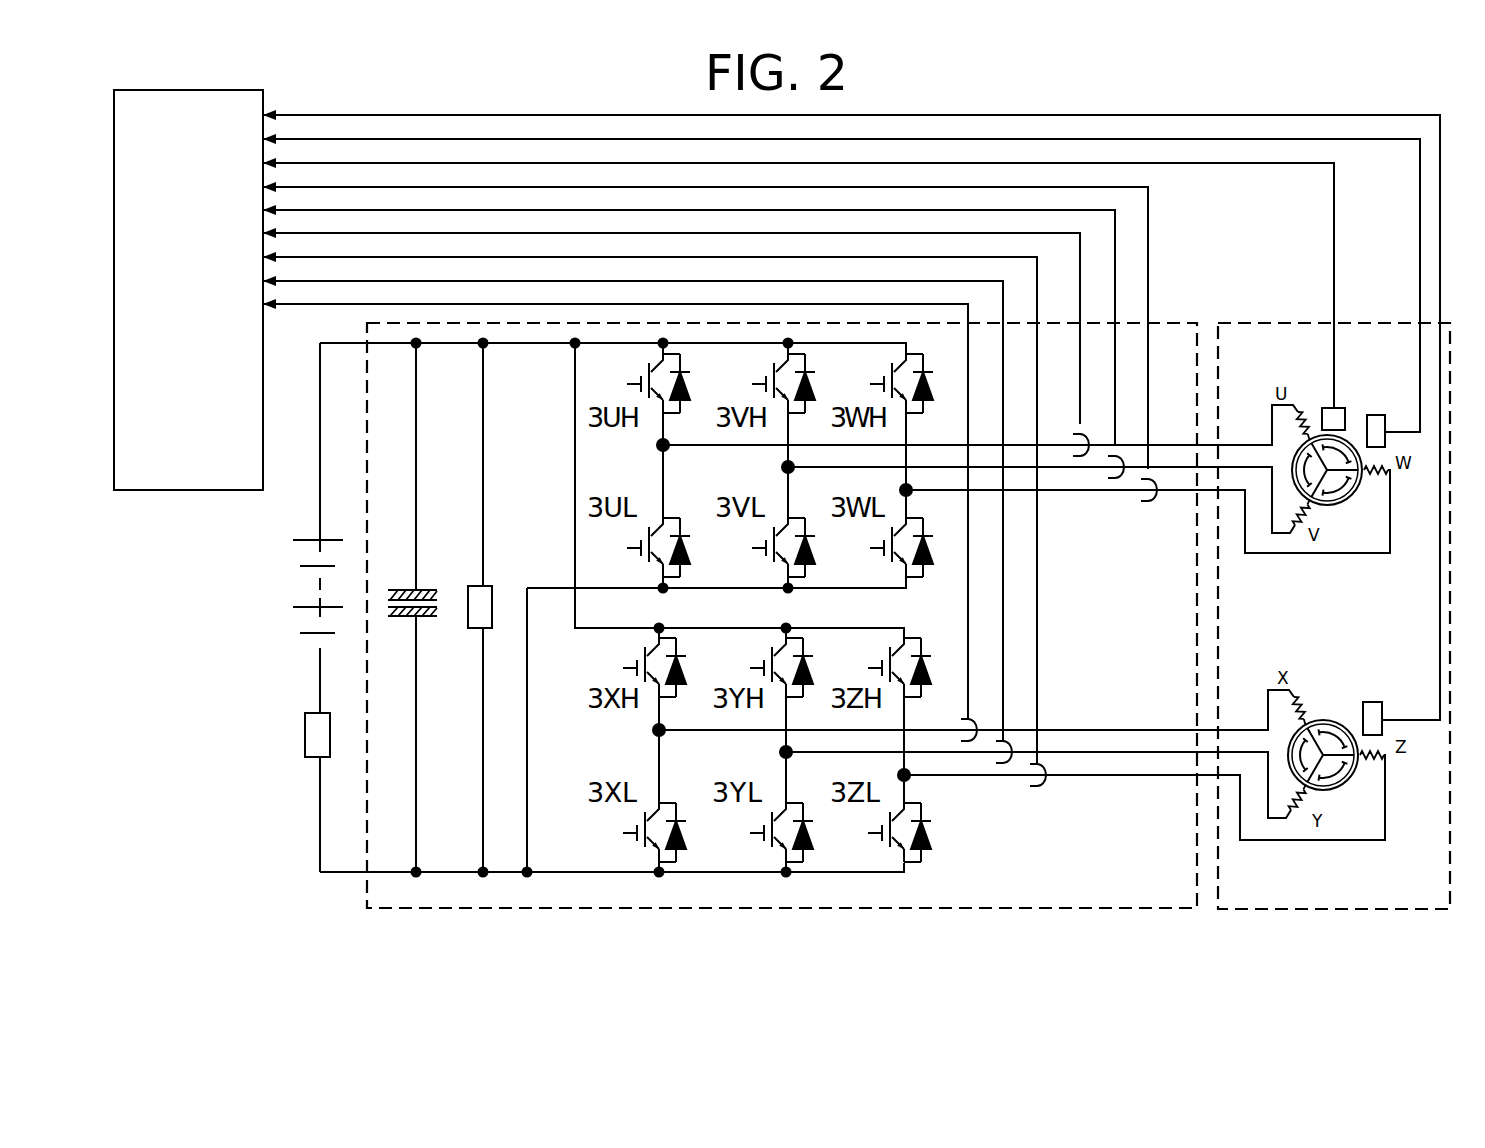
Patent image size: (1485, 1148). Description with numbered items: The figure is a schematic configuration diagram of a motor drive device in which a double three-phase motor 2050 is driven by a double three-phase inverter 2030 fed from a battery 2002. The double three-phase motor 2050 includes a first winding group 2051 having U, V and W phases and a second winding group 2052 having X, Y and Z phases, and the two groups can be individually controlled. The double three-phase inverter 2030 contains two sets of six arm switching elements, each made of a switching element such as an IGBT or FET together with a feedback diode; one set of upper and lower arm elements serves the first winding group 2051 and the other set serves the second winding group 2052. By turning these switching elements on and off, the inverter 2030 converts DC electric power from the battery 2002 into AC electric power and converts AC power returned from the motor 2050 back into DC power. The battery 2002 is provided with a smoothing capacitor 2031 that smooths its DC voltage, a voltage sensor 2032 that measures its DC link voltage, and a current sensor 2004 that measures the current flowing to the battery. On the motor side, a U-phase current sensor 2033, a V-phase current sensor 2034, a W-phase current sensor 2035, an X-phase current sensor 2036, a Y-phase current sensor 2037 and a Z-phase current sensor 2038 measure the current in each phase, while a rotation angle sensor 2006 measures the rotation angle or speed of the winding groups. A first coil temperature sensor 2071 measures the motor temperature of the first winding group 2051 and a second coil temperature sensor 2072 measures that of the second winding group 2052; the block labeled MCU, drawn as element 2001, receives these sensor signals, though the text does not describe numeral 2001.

The MCU 2001 is at (157, 492).
The battery 2002 is at (300, 540).
The current sensor 2004 is at (305, 748).
The rotation angle sensor 2006 is at (1322, 402).
The double three-phase inverter 2030 is at (1043, 908).
The smoothing capacitor 2031 is at (421, 590).
The voltage sensor 2032 is at (489, 582).
The U-phase current sensor 2033 is at (1073, 458).
The V-phase current sensor 2034 is at (1108, 480).
The W-phase current sensor 2035 is at (1141, 503).
The X-phase current sensor 2036 is at (961, 742).
The Y-phase current sensor 2037 is at (996, 765).
The Z-phase current sensor 2038 is at (1030, 788).
The double three-phase motor 2050 is at (1343, 915).
The first winding group 2051 is at (1280, 556).
The second winding group 2052 is at (1325, 840).
The first coil temperature sensor 2071 is at (1373, 412).
The second coil temperature sensor 2072 is at (1373, 700).